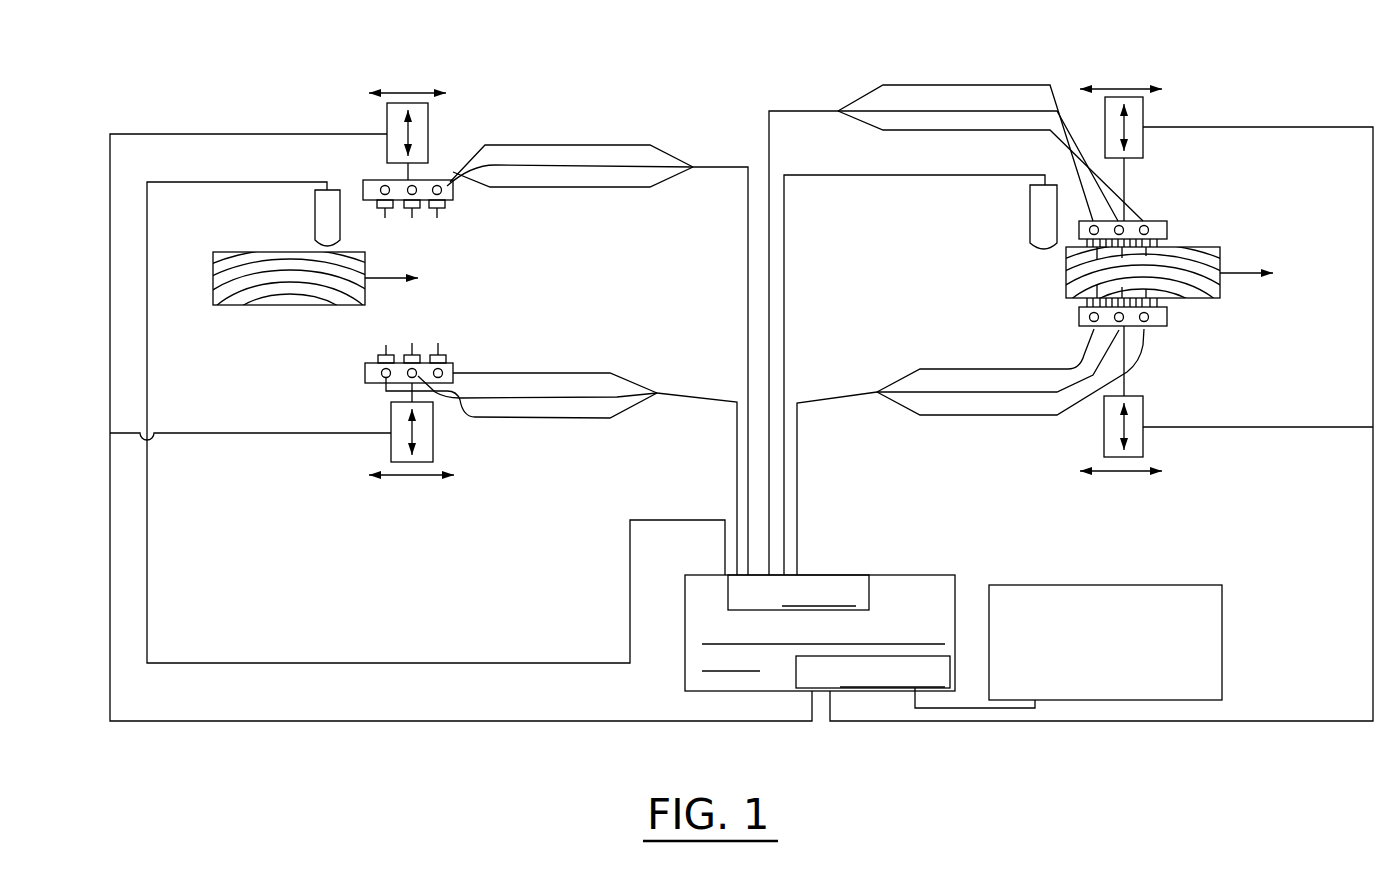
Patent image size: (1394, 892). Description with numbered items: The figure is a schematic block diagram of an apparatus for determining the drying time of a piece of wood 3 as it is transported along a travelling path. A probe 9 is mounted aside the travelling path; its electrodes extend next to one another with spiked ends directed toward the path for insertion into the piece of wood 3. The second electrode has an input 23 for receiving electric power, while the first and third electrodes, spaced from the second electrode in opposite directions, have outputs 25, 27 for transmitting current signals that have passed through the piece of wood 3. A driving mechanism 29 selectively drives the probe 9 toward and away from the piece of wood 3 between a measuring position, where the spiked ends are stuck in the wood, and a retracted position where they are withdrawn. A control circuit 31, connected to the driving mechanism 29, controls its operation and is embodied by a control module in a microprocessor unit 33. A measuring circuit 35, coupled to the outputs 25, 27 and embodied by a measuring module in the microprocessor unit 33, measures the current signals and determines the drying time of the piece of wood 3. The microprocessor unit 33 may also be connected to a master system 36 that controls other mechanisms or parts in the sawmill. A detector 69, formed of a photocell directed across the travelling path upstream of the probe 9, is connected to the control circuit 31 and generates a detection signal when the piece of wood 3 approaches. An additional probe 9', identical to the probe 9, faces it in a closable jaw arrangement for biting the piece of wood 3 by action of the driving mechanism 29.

The piece of wood 3 is at (222, 252).
The probe 9 is at (786, 214).
The additional probe 9' is at (796, 339).
The input 23 is at (410, 189).
The output 25 is at (384, 186).
The output 27 is at (438, 186).
The driving mechanism 29 is at (430, 122).
The control circuit 31 is at (836, 687).
The microprocessor unit 33 is at (850, 575).
The measuring circuit 35 is at (773, 606).
The master system 36 is at (1132, 644).
The detector 69 is at (315, 212).